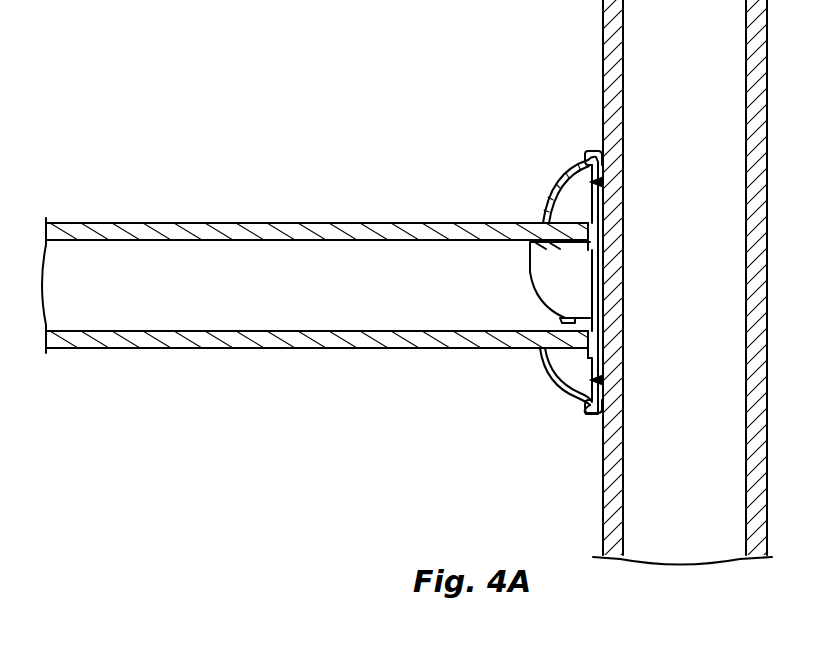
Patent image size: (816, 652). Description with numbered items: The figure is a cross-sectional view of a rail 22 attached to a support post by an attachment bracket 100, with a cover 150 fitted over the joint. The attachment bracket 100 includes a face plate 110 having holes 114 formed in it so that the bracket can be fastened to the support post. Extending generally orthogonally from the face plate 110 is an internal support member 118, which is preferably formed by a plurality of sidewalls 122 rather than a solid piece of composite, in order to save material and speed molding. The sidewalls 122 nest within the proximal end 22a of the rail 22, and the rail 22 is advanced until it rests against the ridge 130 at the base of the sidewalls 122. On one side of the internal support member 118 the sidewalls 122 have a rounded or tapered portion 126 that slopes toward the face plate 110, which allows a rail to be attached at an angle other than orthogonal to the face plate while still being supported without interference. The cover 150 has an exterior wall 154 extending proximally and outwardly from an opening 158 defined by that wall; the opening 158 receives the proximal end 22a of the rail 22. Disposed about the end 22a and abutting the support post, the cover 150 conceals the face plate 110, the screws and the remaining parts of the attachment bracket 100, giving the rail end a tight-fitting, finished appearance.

The rail 22 is at (262, 231).
The proximal end of the rail 22a is at (541, 352).
The attachment bracket 100 is at (648, 284).
The face plate 110 is at (603, 228).
The holes 114 is at (603, 165).
The internal support member 118 is at (603, 182).
The sidewalls 122 is at (533, 278).
The rounded or tapered portion 126 is at (552, 341).
The ridge 130 is at (587, 158).
The cover 150 is at (513, 166).
The exterior wall 154 is at (562, 176).
The opening 158 is at (547, 205).